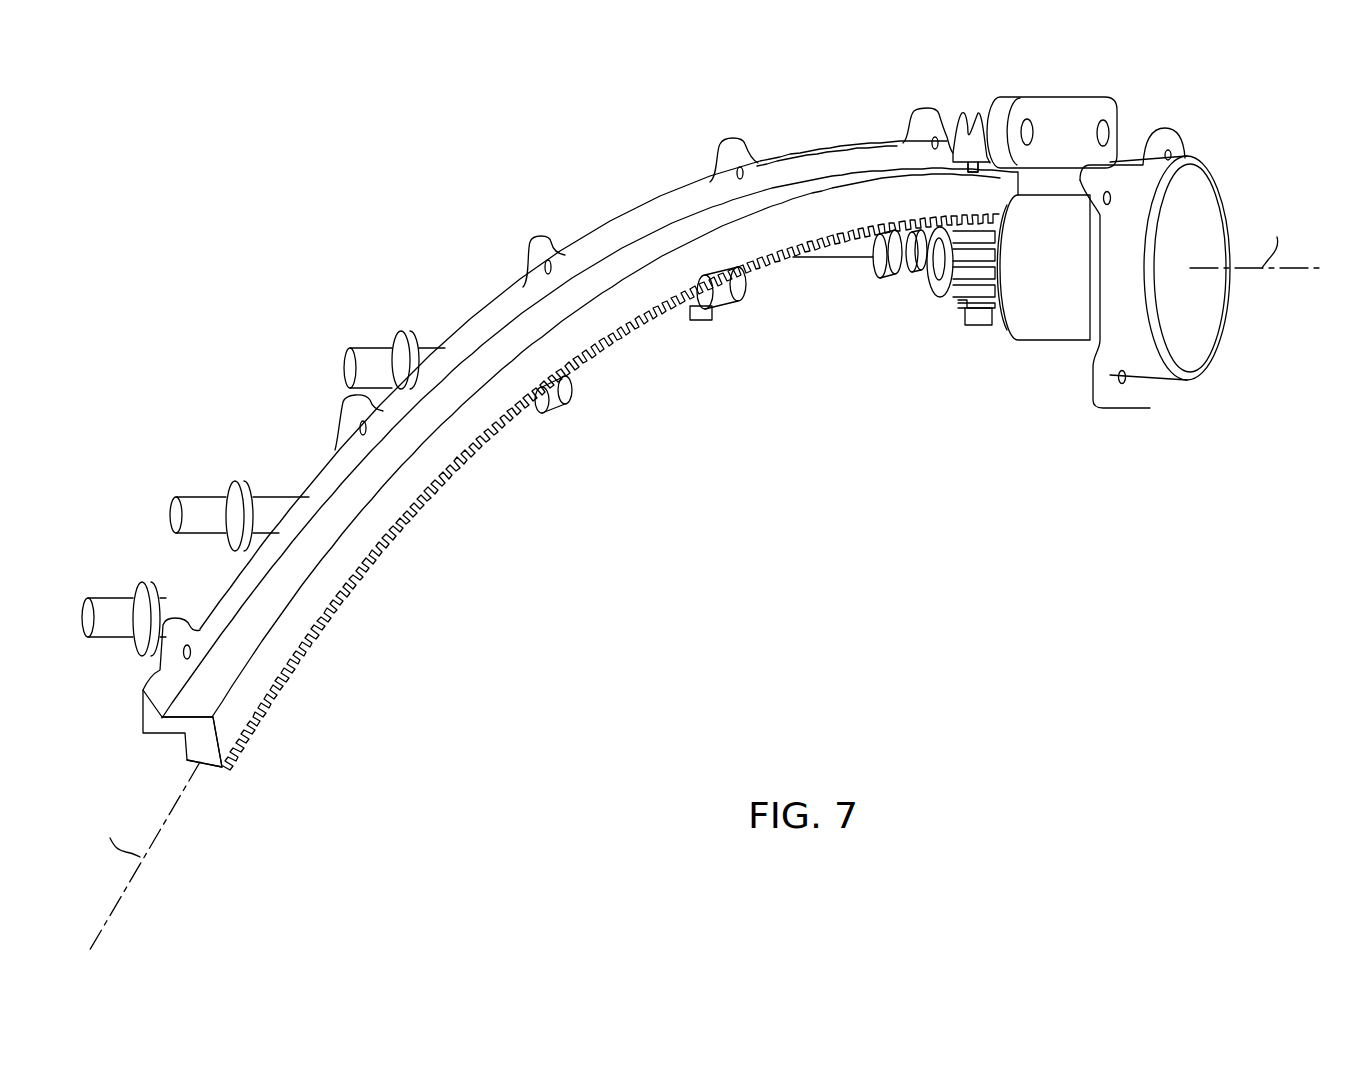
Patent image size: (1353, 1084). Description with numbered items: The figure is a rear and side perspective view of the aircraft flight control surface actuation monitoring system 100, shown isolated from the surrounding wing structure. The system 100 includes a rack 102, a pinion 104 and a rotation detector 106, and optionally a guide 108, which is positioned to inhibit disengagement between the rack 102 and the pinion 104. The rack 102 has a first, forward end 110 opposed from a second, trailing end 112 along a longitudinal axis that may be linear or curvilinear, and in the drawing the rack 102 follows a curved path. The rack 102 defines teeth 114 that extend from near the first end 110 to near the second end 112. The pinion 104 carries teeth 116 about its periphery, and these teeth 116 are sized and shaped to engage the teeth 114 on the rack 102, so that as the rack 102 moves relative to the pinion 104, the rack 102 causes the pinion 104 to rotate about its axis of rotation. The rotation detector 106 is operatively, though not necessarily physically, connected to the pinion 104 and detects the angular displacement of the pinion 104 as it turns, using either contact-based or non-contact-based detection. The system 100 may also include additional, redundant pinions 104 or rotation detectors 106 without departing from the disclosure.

The aircraft flight control surface actuation monitoring system 100 is at (270, 182).
The rack 102 is at (593, 313).
The pinion 104 is at (983, 313).
The rotation detector 106 is at (1158, 380).
The guide 108 is at (1063, 110).
The first end 110 is at (979, 163).
The second end 112 is at (228, 780).
The teeth 114 is at (437, 485).
The teeth 116 is at (967, 307).